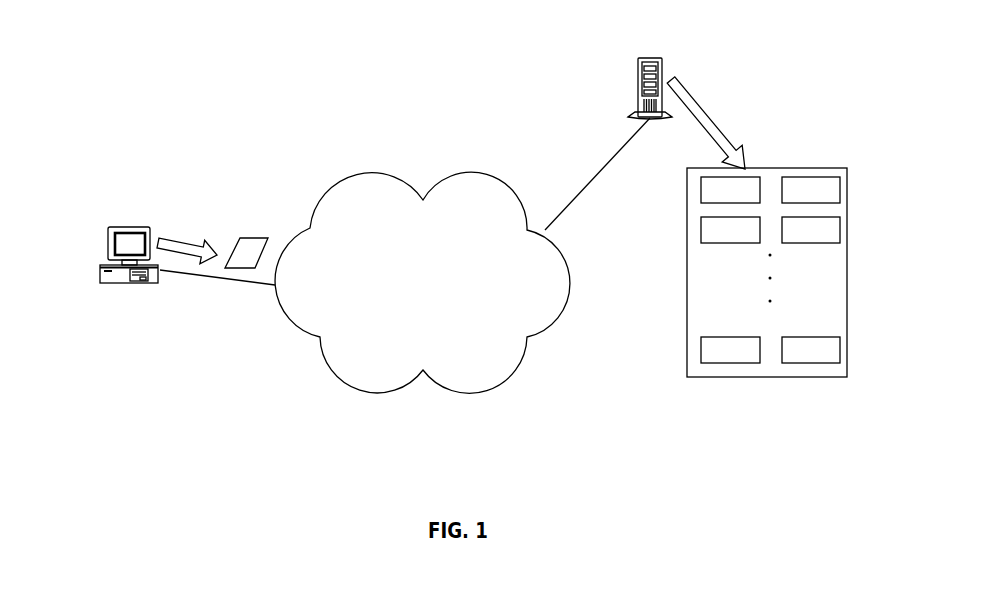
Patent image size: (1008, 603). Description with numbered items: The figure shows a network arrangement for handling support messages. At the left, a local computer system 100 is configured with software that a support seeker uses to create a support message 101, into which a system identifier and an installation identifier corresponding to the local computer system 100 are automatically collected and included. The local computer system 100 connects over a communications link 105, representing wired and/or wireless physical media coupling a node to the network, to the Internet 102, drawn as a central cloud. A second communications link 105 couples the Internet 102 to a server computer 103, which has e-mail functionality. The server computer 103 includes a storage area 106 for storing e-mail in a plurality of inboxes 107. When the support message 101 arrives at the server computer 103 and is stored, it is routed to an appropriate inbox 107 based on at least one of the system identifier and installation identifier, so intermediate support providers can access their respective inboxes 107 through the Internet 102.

The local computer system 100 is at (98, 270).
The support message 101 is at (258, 237).
The Internet 102 is at (338, 372).
The server computer 103 is at (638, 88).
The communications link 105 is at (220, 277).
The storage area 106 is at (763, 168).
The inboxes 107 is at (701, 192).